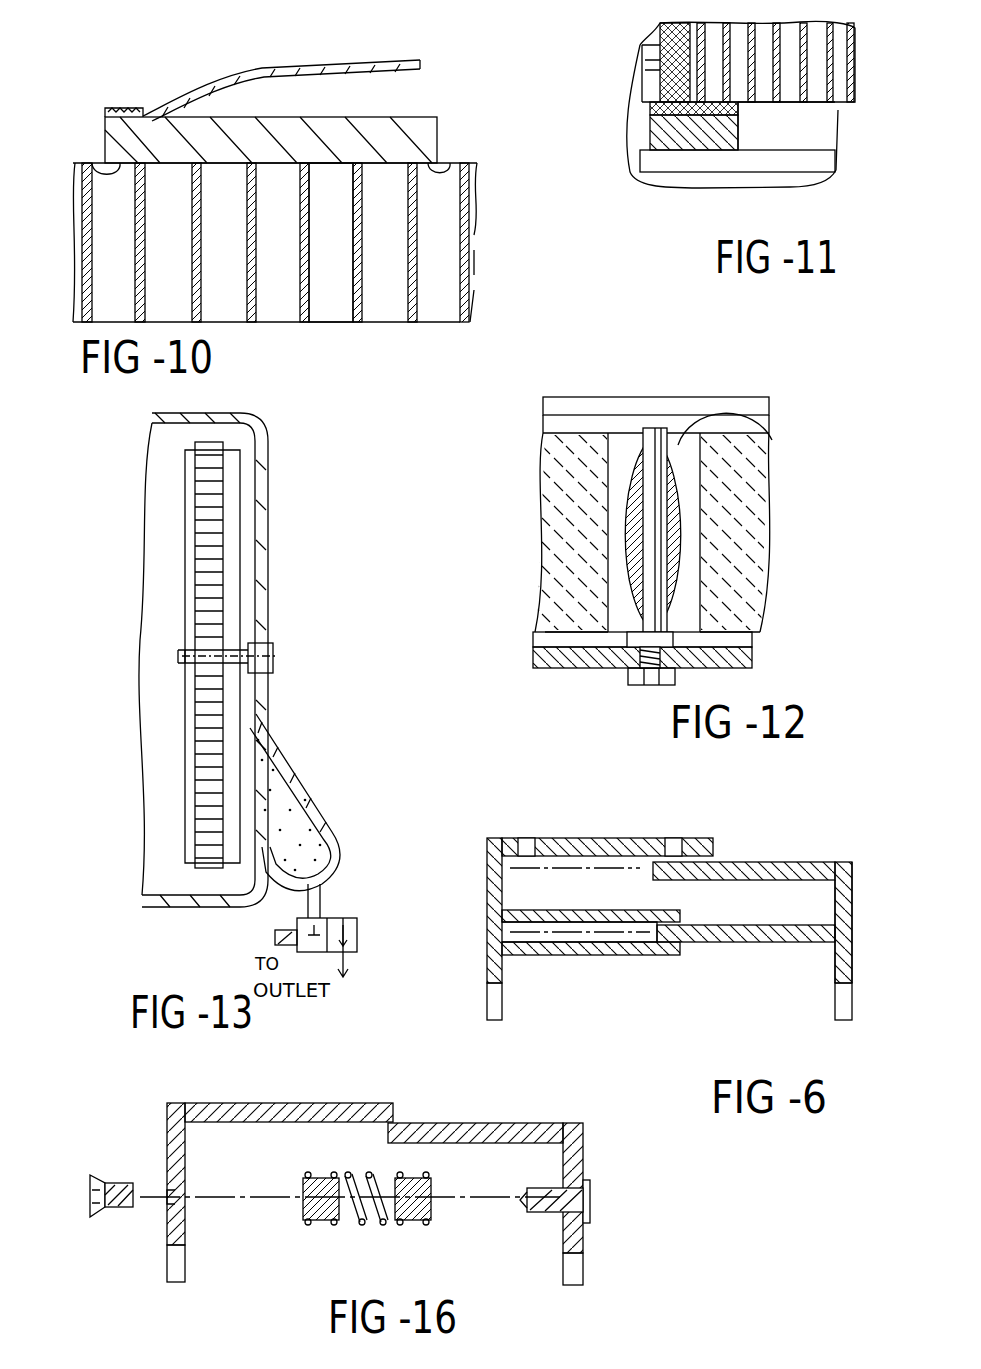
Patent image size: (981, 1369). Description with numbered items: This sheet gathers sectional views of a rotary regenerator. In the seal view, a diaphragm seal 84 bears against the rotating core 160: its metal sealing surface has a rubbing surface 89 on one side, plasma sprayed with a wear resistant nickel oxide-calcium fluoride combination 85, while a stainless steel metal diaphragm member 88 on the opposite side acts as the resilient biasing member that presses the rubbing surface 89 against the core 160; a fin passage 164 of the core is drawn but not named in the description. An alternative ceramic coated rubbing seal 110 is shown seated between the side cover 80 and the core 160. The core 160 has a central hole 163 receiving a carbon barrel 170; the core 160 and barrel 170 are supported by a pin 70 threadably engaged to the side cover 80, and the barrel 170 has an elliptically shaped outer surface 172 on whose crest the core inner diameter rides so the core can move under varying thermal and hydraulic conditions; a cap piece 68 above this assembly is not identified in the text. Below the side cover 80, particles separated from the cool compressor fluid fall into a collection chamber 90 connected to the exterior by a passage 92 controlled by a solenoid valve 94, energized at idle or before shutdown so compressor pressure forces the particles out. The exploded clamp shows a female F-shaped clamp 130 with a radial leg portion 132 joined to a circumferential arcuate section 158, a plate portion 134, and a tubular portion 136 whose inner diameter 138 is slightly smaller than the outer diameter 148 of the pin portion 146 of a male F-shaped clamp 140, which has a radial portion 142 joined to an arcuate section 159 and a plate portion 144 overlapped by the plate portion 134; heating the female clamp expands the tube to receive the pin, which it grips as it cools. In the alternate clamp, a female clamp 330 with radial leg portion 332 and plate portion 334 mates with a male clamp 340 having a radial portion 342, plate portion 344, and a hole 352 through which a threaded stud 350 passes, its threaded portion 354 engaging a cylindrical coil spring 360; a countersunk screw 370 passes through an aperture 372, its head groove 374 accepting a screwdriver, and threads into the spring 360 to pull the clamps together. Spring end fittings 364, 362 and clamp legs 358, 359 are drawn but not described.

In FIG. 10, the diaphragm seal 84 is at (421, 100).
In FIG. 10, the nickel oxide-calcium fluoride combination 85 is at (98, 163).
In FIG. 10, the stainless steel metal diaphragm member 88 is at (336, 66).
In FIG. 10, the rubbing surface 89 is at (445, 165).
In FIG. 10, the regenerator core 160 is at (432, 304).
In FIG. 11, the regenerator core 160 is at (842, 55).
In FIG. 12, the regenerator core 160 is at (755, 468).
In FIG. 13, the regenerator core 160 is at (240, 493).
In FIG. 10, the fin passage 164 is at (312, 302).
In FIG. 11, the side cover 80 is at (816, 138).
In FIG. 12, the side cover 80 is at (552, 666).
In FIG. 13, the side cover 80 is at (268, 553).
In FIG. 11, the ceramic coated rubbing seal 110 is at (737, 110).
In FIG. 12, the top cover plate 68 is at (578, 402).
In FIG. 12, the central hole 163 is at (680, 433).
In FIG. 12, the elliptically shaped outer surface 172 is at (690, 552).
In FIG. 12, the carbon barrel 170 is at (667, 608).
In FIG. 12, the pin 70 is at (637, 686).
In FIG. 13, the pin 70 is at (276, 652).
In FIG. 13, the collection chamber 90 is at (284, 770).
In FIG. 13, the passage 92 is at (330, 843).
In FIG. 13, the solenoid valve 94 is at (345, 917).
In FIG. 6, the radial leg portion 132 is at (487, 868).
In FIG. 6, the plate portion 134 is at (497, 837).
In FIG. 6, the female F-shaped clamp 130 is at (720, 810).
In FIG. 6, the plate portion 144 is at (745, 862).
In FIG. 6, the male F-shaped clamp 140 is at (818, 858).
In FIG. 6, the radial portion 142 is at (853, 947).
In FIG. 6, the outer diameter 148 is at (743, 917).
In FIG. 6, the tubular portion 136 is at (582, 957).
In FIG. 6, the inner diameter 138 is at (622, 940).
In FIG. 6, the pin portion 146 is at (782, 943).
In FIG. 6, the circumferential arcuate section 158 is at (505, 1013).
In FIG. 6, the circumferential arcuate section 159 is at (832, 1017).
In FIG. 16, the female F-shaped clamp 330 is at (188, 1092).
In FIG. 16, the radial leg portion 332 is at (167, 1143).
In FIG. 16, the plate portion 334 is at (305, 1103).
In FIG. 16, the plate portion 344 is at (460, 1093).
In FIG. 16, the male F-shaped clamp 340 is at (560, 1100).
In FIG. 16, the radial portion 342 is at (584, 1180).
In FIG. 16, the aperture 352 is at (584, 1172).
In FIG. 16, the threaded stud 350 is at (573, 1203).
In FIG. 16, the threaded portion 354 is at (540, 1190).
In FIG. 16, the left spring bushing 364 is at (303, 1178).
In FIG. 16, the cylindrical coil spring 360 is at (363, 1227).
In FIG. 16, the right spring bushing 362 is at (431, 1203).
In FIG. 16, the aperture 372 is at (178, 1200).
In FIG. 16, the groove 374 is at (160, 1208).
In FIG. 16, the left bracket leg 358 is at (186, 1260).
In FIG. 16, the right bracket leg 359 is at (584, 1272).
In FIG. 16, the countersunk screw 370 is at (113, 1210).